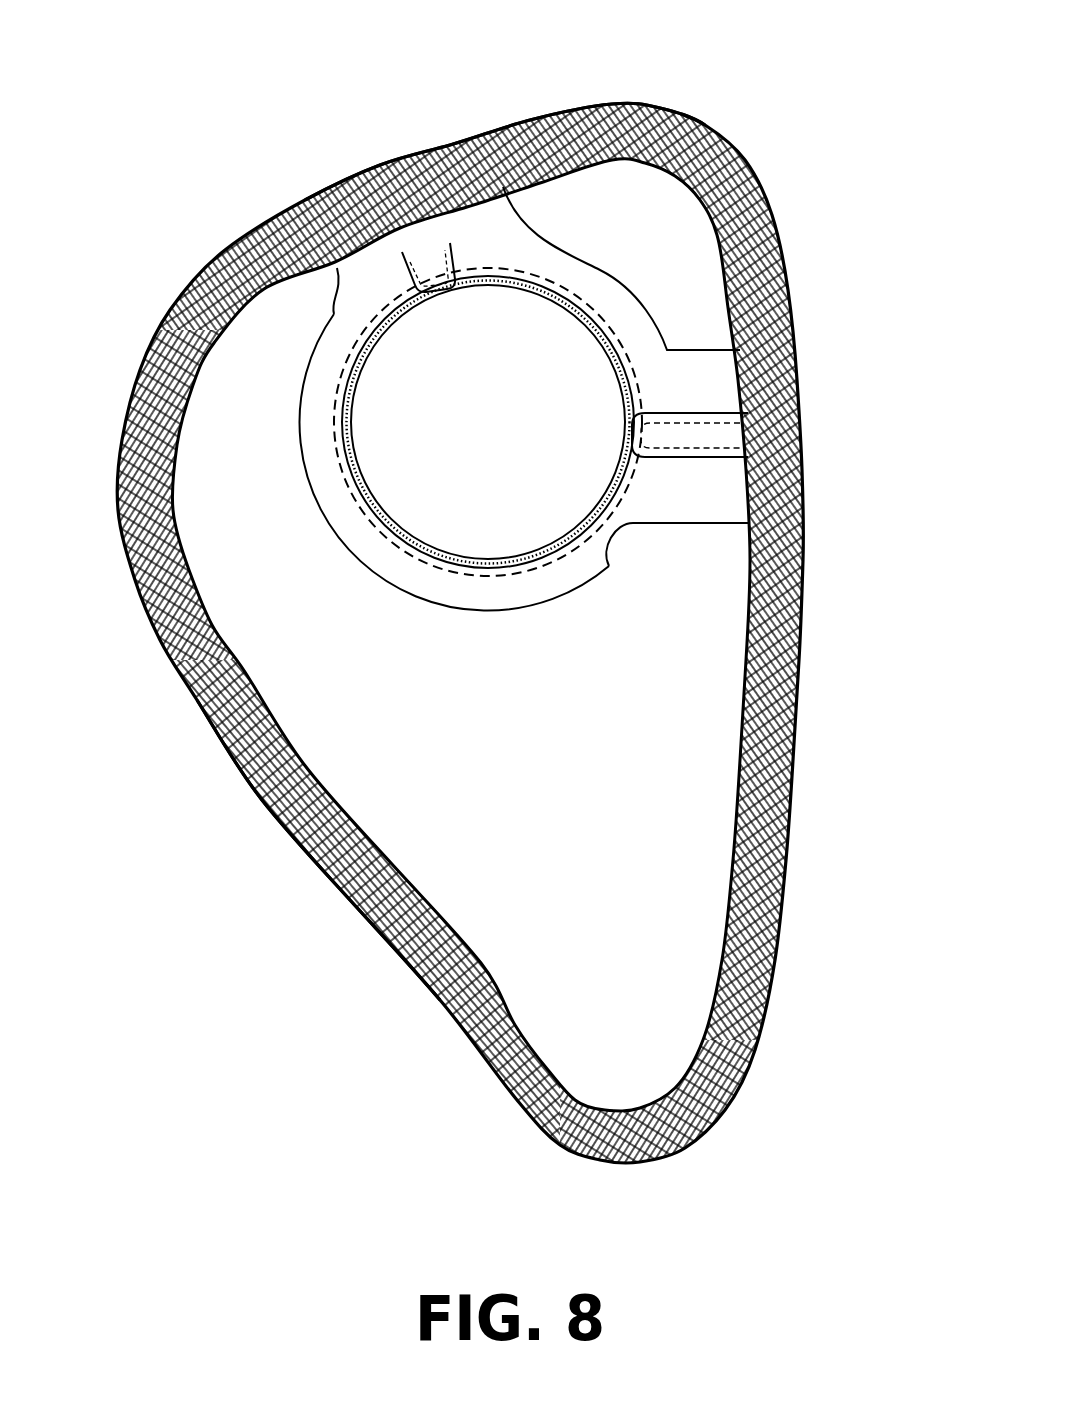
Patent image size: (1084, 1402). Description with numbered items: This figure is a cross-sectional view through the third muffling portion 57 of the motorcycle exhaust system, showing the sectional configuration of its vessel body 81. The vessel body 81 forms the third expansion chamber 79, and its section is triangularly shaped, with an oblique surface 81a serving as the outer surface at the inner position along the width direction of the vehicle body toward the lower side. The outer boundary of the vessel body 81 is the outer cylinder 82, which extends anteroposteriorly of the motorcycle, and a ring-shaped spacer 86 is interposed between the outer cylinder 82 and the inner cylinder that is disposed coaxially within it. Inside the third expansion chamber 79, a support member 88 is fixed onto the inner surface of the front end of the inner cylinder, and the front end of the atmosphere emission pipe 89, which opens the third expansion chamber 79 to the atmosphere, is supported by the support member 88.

The third muffling portion 57 is at (513, 600).
The third expansion chamber 79 is at (593, 866).
The vessel body 81 is at (810, 620).
The oblique surface 81a is at (283, 836).
The outer cylinder 82 is at (613, 102).
The ring-shaped spacer 86 is at (463, 160).
The support member 88 is at (432, 582).
The atmosphere emission pipe 89 is at (530, 554).